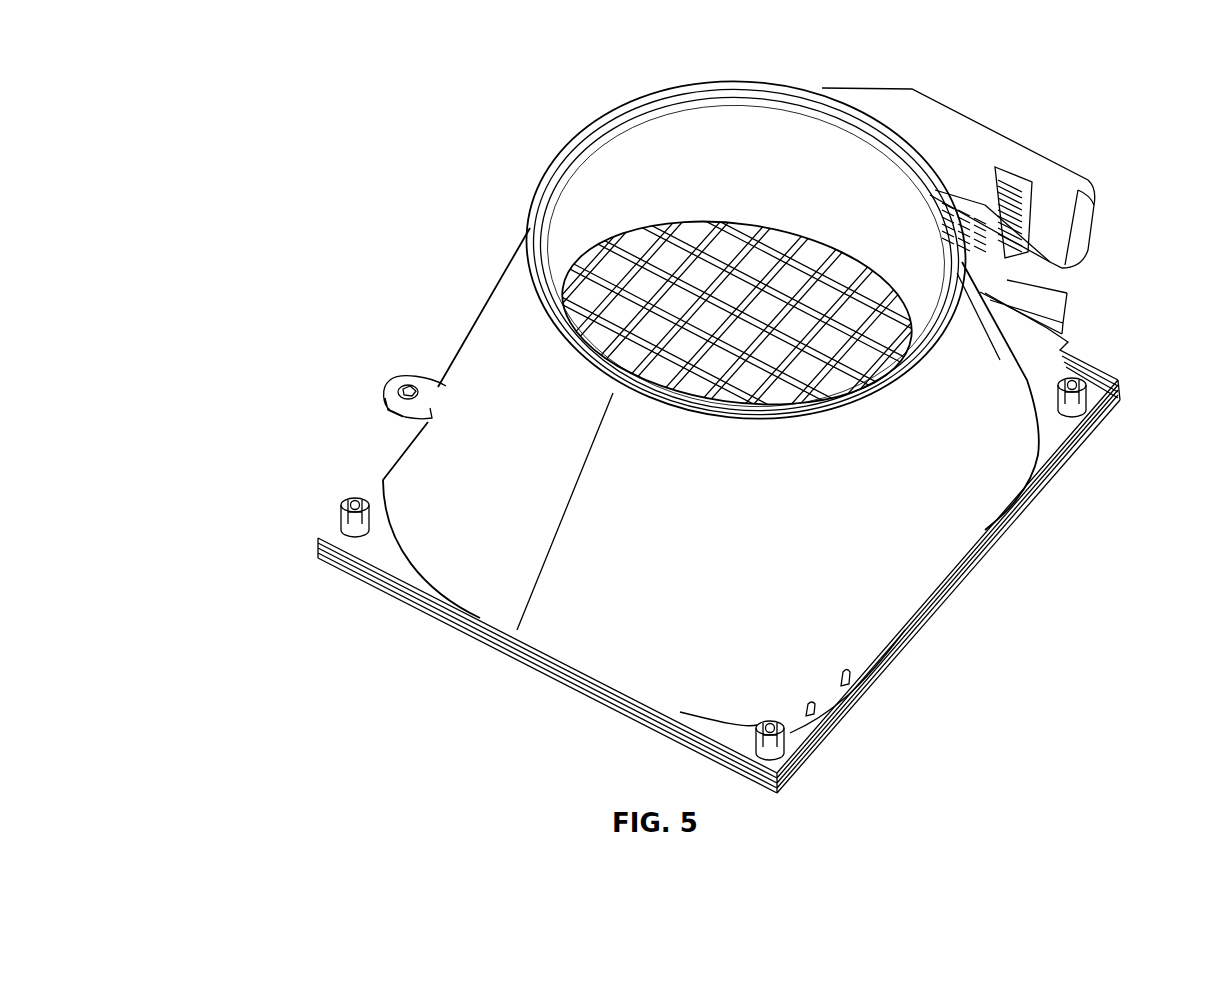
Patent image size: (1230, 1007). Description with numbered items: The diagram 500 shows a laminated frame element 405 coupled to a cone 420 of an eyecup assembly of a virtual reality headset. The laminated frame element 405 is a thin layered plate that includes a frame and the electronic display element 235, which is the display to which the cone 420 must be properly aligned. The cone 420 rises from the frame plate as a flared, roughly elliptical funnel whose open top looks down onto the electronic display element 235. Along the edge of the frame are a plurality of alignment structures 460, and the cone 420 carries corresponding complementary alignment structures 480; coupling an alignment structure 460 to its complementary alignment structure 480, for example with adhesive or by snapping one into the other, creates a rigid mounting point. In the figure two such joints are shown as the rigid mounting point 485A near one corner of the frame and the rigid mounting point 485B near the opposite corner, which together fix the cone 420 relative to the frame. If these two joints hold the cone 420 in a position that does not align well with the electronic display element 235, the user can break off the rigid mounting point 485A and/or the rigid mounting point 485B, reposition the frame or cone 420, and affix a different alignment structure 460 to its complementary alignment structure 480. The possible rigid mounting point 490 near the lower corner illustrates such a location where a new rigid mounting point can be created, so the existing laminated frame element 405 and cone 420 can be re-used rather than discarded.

The diagram 500 is at (683, 435).
The cone 420 is at (515, 262).
The rigid mounting point 485A is at (365, 503).
The rigid mounting point 485B is at (1095, 385).
The laminated frame element 405 is at (320, 573).
The electronic display element 235 is at (440, 620).
The alignment structure 460 is at (750, 727).
The complementary alignment structure 480 is at (790, 750).
The possible rigid mounting point 490 is at (850, 682).